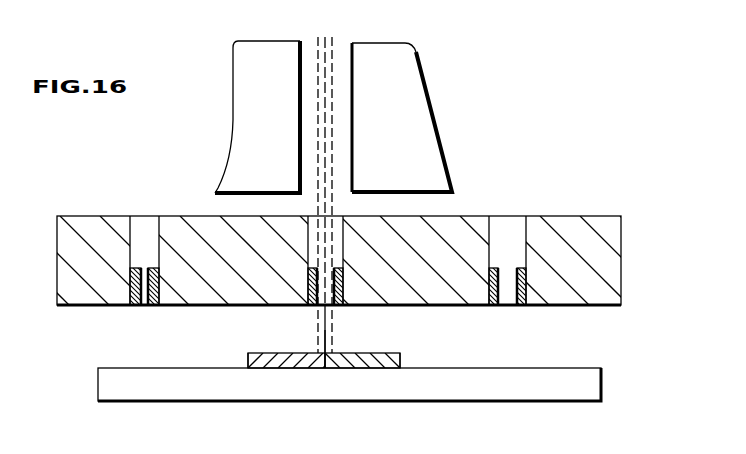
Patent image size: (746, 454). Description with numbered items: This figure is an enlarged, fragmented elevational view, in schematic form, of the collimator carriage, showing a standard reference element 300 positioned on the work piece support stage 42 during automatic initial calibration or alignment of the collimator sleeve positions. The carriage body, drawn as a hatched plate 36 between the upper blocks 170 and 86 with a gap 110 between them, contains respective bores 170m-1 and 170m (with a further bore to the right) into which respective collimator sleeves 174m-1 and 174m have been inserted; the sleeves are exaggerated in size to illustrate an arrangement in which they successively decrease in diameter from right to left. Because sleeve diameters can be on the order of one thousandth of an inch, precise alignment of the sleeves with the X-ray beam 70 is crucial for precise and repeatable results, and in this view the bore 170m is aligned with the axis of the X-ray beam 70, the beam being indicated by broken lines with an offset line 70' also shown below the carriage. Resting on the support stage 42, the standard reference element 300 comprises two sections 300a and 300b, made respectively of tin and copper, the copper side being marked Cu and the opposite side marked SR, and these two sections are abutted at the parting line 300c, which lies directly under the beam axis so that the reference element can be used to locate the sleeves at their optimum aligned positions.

The substrate plate with slots 36 is at (68, 271).
The work piece support stage 42 is at (108, 391).
The X-ray beam 70 is at (347, 336).
The offset center line 70' is at (350, 349).
The right contact block 86 is at (422, 143).
The gap between blocks 110 is at (347, 53).
The left contact block 170 is at (245, 122).
The bore 170m-1 is at (132, 233).
The bore 170m is at (309, 233).
The collimator sleeve 174m-1 is at (152, 306).
The collimator sleeve 174m is at (310, 304).
The standard reference element 300 is at (364, 362).
The section of standard reference element 300a is at (283, 363).
The section of standard reference element 300b is at (362, 367).
The parting line 300c is at (336, 387).
The solder resist SR is at (248, 358).
The copper Cu is at (402, 361).